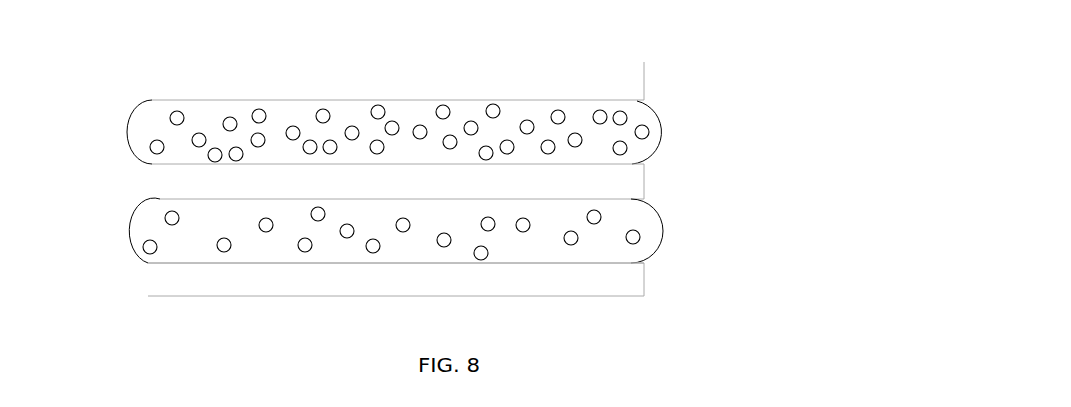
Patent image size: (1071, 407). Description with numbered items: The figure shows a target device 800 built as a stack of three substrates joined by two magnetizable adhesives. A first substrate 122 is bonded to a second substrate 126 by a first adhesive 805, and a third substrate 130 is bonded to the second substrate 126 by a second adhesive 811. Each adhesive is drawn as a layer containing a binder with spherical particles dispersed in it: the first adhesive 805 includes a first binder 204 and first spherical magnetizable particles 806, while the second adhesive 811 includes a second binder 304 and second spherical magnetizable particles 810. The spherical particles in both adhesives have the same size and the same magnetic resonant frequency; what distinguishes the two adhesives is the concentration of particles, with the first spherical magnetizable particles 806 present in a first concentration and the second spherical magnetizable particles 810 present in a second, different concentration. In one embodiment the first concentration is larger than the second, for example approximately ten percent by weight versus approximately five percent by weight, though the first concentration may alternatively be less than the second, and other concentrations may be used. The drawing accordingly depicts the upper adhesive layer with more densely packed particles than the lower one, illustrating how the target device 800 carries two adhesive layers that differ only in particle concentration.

The target device 800 is at (441, 53).
The first substrate 122 is at (643, 63).
The first binder 204 is at (644, 101).
The first spherical magnetizable particles 806 is at (648, 133).
The first adhesive 805 is at (129, 129).
The second substrate 126 is at (645, 184).
The second binder 304 is at (630, 200).
The second spherical magnetizable particles 810 is at (640, 234).
The second adhesive 811 is at (132, 228).
The third substrate 130 is at (644, 296).